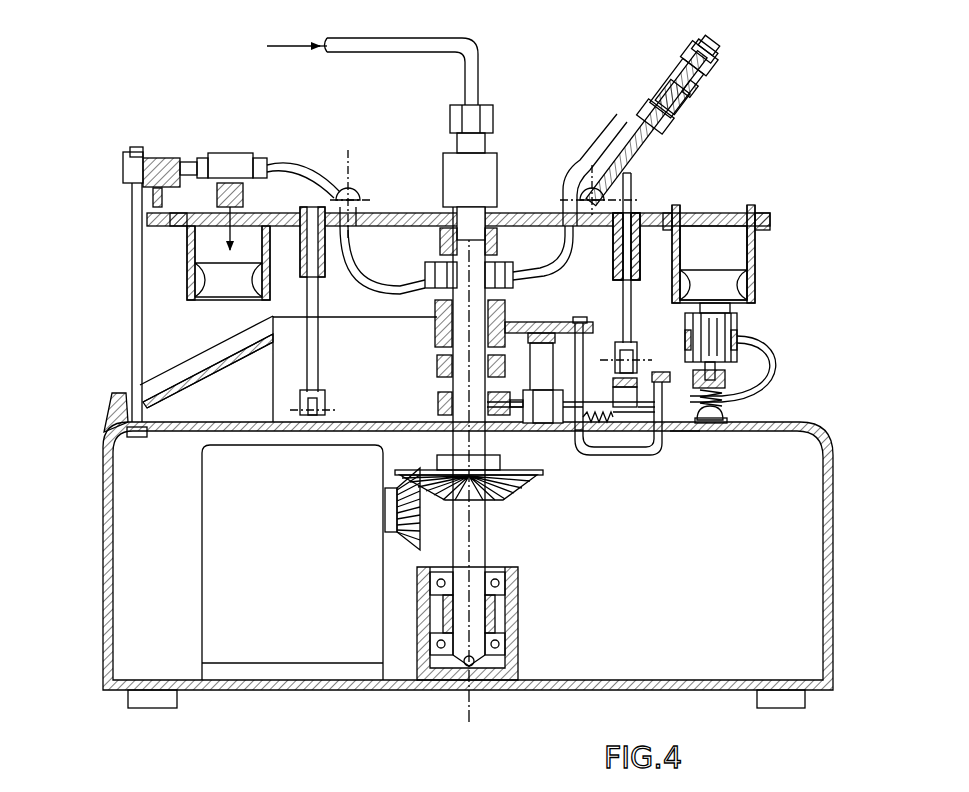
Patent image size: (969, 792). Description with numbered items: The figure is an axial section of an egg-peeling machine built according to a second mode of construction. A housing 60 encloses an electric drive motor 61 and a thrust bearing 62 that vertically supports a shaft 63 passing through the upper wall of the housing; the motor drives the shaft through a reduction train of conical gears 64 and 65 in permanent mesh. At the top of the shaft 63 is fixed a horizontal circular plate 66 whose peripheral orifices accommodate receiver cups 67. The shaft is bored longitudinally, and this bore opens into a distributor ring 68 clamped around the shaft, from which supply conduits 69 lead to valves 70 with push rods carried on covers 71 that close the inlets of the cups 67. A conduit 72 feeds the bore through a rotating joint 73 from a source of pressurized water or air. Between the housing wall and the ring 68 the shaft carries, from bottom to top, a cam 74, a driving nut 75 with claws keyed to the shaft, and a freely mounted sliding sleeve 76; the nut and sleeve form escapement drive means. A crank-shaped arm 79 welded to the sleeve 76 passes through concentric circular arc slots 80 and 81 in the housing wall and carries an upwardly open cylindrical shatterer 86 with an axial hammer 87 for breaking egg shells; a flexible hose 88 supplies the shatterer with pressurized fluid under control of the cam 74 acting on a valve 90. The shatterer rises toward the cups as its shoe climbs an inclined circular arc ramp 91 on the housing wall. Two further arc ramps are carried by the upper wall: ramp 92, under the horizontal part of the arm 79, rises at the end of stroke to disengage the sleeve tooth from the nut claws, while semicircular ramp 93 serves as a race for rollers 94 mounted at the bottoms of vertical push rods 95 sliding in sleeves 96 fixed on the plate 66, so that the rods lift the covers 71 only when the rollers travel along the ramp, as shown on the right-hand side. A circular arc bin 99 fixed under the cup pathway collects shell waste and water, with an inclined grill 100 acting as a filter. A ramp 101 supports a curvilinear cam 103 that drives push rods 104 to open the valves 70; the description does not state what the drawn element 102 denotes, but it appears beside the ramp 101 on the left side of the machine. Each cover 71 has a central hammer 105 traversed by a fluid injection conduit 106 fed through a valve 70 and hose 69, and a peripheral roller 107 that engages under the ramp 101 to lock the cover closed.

The housing 60 is at (832, 640).
The electric drive motor 61 is at (305, 570).
The thrust bearing 62 is at (518, 640).
The shaft 63 is at (480, 553).
The conical gear 64 is at (405, 535).
The conical gear 65 is at (518, 480).
The horizontal circular plate 66 is at (765, 222).
The receiver cup 67 is at (758, 253).
The distributor ring 68 is at (440, 255).
The supply conduit 69 is at (303, 168).
The valve 70 is at (232, 155).
The cover 71 is at (690, 92).
The conduit 72 is at (385, 46).
The rotating joint 73 is at (443, 163).
The cam 74 is at (438, 398).
The driving nut 75 is at (437, 364).
The sliding sleeve 76 is at (437, 335).
The arm 79 is at (650, 457).
The circular arc slot 80 is at (574, 440).
The circular arc slot 81 is at (680, 434).
The shatterer 86 is at (738, 326).
The hammer 87 is at (727, 312).
The flexible hose 88 is at (762, 364).
The valve 90 is at (545, 405).
The inclined ramp 91 is at (728, 420).
The ramp 92 is at (548, 352).
The ramp 93 is at (613, 397).
The roller 94 is at (637, 350).
The push rod 95 is at (318, 330).
The sleeve 96 is at (614, 258).
The bin 99 is at (116, 394).
The inclined grill 100 is at (220, 365).
The ramp 101 is at (125, 165).
The rod 102 is at (130, 268).
The curvilinear cam 103 is at (165, 155).
The push rod 104 is at (675, 50).
The central hammer 105 is at (683, 104).
The fluid injection conduit 106 is at (685, 122).
The peripheral roller 107 is at (712, 52).